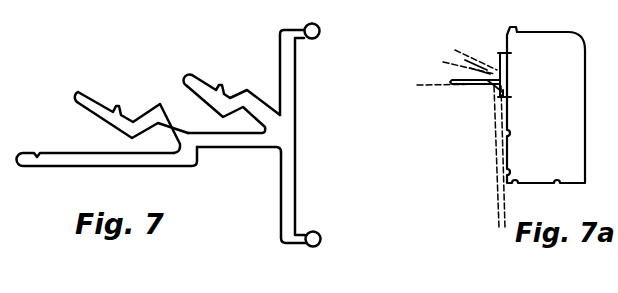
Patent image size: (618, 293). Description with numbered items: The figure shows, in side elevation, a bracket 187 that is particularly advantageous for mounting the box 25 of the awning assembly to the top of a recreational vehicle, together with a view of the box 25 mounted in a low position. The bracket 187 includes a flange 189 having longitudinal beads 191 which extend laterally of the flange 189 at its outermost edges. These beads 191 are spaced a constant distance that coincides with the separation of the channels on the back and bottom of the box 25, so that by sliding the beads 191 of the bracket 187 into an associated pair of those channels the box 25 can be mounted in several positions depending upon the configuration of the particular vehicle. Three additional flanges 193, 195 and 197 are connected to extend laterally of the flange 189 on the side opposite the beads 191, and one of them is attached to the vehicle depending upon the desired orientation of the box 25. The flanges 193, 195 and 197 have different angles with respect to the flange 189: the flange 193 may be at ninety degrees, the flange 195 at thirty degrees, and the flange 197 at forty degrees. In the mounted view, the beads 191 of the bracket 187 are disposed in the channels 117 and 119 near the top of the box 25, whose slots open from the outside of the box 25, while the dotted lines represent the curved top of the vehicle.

In FIG. 7a, the box 25 is at (556, 32).
In FIG. 7a, the channel 117 is at (510, 56).
In FIG. 7a, the channel 119 is at (510, 94).
In FIG. 7, the bracket 187 is at (323, 94).
In FIG. 7a, the bracket 187 is at (500, 55).
In FIG. 7, the flange 189 is at (288, 184).
In FIG. 7, the longitudinal beads 191 is at (320, 30).
In FIG. 7, the flange 193 is at (134, 167).
In FIG. 7, the flange 195 is at (105, 100).
In FIG. 7, the flange 197 is at (200, 75).